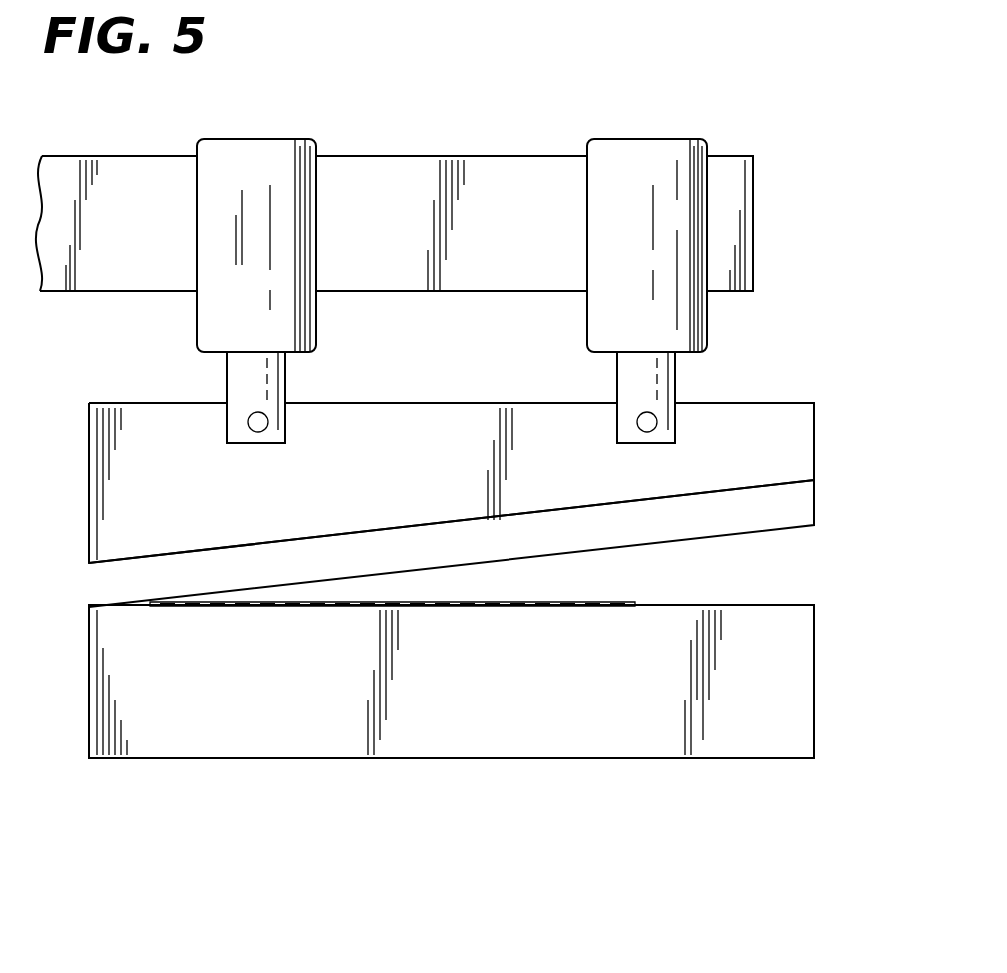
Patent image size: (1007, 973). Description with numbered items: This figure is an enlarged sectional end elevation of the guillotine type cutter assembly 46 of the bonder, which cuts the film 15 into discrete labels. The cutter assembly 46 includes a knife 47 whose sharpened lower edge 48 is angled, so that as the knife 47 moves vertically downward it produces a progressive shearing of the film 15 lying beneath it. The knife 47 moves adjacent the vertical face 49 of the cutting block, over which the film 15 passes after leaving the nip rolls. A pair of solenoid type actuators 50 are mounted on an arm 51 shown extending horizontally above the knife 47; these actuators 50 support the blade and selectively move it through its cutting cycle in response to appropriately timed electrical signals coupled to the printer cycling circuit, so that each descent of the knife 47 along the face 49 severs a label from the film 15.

The film 15 is at (605, 602).
The guillotine type cutter assembly 46 is at (497, 514).
The knife 47 is at (815, 420).
The sharpened lower edge 48 is at (777, 529).
The vertical face 49 is at (797, 655).
The solenoid type actuators 50 is at (316, 150).
The arm 51 is at (736, 165).